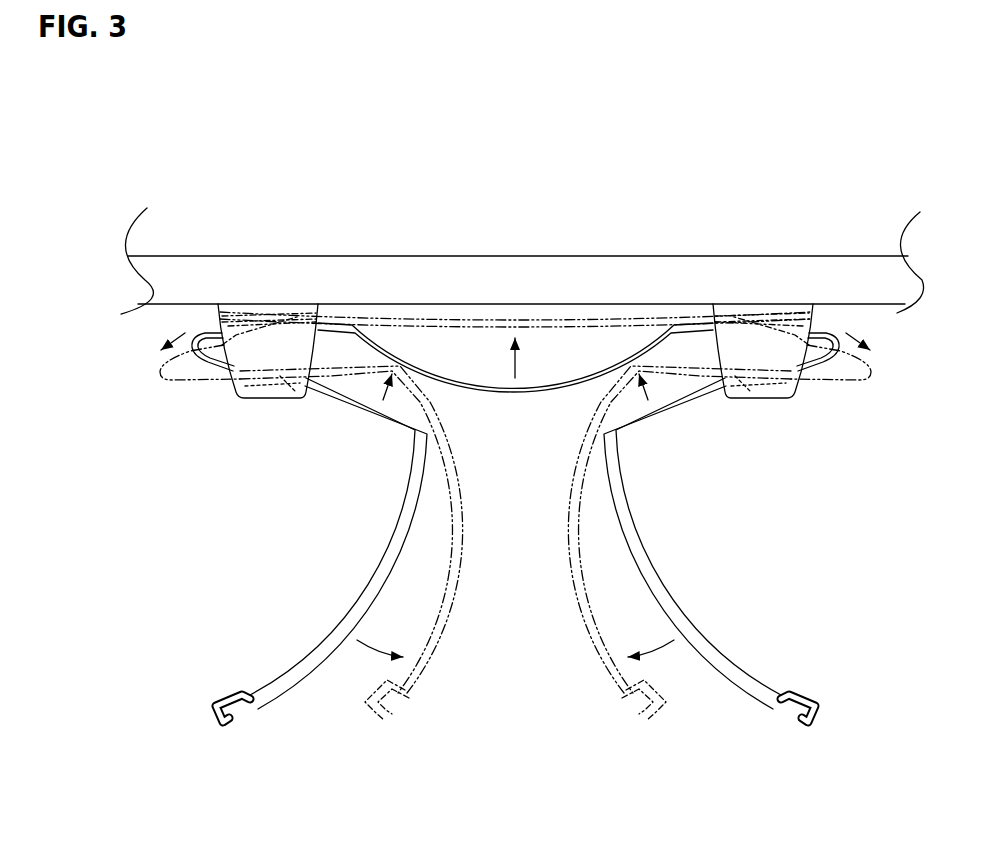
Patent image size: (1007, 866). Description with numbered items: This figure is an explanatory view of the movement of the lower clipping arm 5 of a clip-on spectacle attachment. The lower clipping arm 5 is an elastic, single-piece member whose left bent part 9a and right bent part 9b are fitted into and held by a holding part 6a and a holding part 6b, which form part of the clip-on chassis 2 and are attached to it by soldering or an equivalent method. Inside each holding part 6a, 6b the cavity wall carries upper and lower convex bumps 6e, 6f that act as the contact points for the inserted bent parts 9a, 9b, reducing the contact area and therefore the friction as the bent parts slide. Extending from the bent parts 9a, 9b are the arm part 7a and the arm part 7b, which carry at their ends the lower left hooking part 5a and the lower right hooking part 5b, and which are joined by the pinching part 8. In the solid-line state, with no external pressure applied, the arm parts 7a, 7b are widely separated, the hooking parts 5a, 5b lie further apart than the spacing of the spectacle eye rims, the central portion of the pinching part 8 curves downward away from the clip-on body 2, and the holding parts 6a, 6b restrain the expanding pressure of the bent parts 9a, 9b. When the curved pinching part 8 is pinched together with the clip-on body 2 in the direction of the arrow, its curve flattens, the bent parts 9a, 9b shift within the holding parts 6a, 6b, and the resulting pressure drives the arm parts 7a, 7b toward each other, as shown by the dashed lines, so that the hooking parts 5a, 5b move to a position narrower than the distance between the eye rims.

The clip-on chassis 2 is at (662, 280).
The lower clipping arm 5 is at (515, 504).
The lower left hooking part 5a is at (233, 727).
The lower right hooking part 5b is at (640, 718).
The holding part 6a is at (273, 348).
The holding part 6b is at (759, 348).
The convex curve bump 6e is at (233, 311).
The convex curve bump 6f is at (293, 380).
The arm part 7a is at (365, 605).
The arm part 7b is at (588, 598).
The pinching part 8 is at (462, 321).
The left bent part 9a is at (168, 380).
The right bent part 9b is at (860, 382).